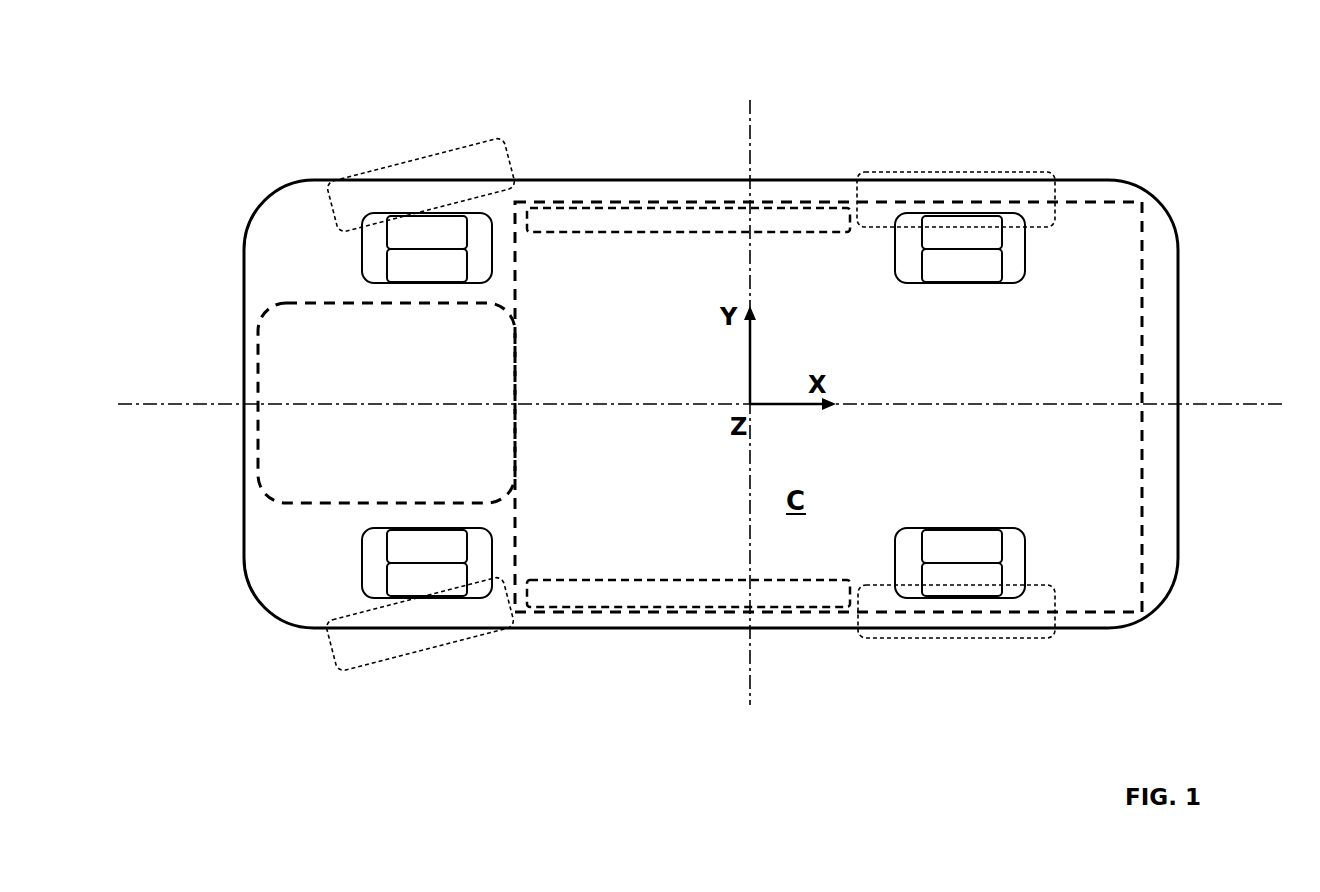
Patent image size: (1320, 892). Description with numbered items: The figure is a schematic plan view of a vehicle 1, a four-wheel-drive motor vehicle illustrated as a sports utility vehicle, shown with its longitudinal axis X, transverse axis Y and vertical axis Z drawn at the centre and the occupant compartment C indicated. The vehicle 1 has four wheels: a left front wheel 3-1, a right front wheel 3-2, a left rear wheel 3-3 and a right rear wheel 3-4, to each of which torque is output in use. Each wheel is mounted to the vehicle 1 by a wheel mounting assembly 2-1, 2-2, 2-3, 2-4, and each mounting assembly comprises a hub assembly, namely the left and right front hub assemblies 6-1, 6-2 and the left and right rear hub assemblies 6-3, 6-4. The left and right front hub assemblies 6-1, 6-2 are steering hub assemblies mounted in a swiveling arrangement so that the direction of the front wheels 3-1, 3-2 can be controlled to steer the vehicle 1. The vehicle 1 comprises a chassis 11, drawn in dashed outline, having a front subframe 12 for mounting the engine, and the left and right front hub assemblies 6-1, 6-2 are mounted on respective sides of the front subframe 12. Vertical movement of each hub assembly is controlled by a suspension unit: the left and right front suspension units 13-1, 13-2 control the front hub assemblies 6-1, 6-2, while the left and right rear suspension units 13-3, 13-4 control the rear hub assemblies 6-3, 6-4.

The vehicle 1 is at (1166, 134).
The chassis 11 is at (1127, 230).
The front subframe 12 is at (263, 338).
The wheel mounting assembly 2-1 is at (473, 537).
The wheel mounting assembly 2-2 is at (476, 274).
The wheel mounting assembly 2-3 is at (1006, 536).
The wheel mounting assembly 2-4 is at (1009, 274).
The left front wheel 3-1 is at (457, 637).
The right front wheel 3-2 is at (453, 173).
The left rear wheel 3-3 is at (988, 638).
The right rear wheel 3-4 is at (985, 173).
The left front hub assembly 6-1 is at (445, 591).
The right front hub assembly 6-2 is at (445, 244).
The left rear hub assembly 6-3 is at (980, 591).
The right rear hub assembly 6-4 is at (980, 244).
The left front suspension unit 13-1 is at (402, 558).
The right front suspension unit 13-2 is at (402, 277).
The left rear suspension unit 13-3 is at (937, 558).
The right rear suspension unit 13-4 is at (937, 277).